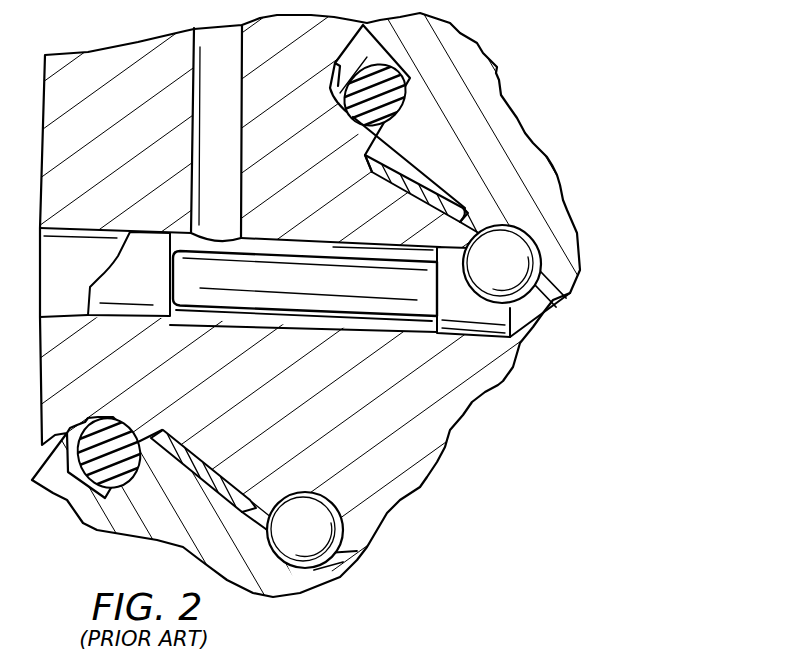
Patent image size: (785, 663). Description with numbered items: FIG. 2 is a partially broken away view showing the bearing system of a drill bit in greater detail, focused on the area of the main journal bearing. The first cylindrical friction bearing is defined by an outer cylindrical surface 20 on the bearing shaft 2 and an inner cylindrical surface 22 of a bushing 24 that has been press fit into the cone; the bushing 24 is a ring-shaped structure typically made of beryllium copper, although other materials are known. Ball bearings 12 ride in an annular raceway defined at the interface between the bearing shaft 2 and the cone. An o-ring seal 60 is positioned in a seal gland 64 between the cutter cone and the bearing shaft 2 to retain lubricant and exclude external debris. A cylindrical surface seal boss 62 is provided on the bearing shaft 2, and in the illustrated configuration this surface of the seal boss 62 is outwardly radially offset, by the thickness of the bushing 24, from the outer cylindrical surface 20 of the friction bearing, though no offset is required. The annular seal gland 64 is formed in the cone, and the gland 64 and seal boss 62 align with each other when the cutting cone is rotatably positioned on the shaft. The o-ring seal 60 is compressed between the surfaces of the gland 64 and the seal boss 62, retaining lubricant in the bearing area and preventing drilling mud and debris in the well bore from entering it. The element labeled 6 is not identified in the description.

The bearing shaft 2 is at (318, 400).
The vertical bore 6 is at (213, 226).
The ball bearings 12 is at (526, 216).
The outer cylindrical surface 20 is at (370, 173).
The inner cylindrical surface 22 is at (404, 156).
The bushing 24 is at (425, 175).
The o-ring seal 60 is at (367, 150).
The seal boss 62 is at (354, 118).
The seal gland 64 is at (398, 76).